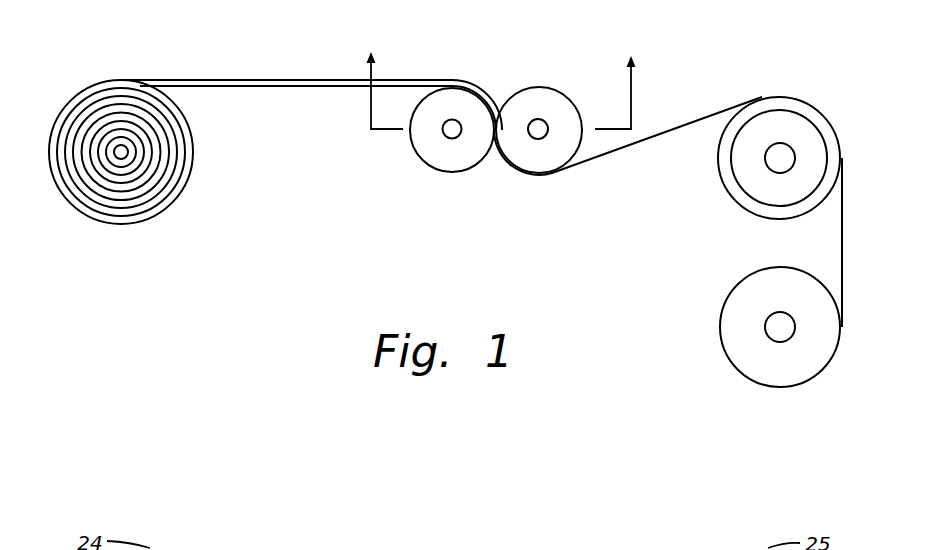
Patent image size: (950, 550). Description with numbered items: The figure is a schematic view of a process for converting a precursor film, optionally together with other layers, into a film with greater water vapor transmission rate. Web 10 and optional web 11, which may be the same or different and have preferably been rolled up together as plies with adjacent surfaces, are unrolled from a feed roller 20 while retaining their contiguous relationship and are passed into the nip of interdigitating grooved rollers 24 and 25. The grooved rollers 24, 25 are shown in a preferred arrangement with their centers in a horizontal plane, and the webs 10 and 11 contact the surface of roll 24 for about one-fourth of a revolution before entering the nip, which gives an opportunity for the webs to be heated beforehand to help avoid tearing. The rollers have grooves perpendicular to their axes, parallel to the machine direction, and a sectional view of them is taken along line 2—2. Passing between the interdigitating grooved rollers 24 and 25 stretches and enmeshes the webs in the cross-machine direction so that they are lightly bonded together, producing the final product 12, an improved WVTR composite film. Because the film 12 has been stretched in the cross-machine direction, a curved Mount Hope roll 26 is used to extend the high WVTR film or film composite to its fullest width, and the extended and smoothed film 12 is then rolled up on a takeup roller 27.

The web 10 is at (228, 80).
The optional web 11 is at (300, 88).
The final product 12 is at (703, 120).
The feed roller 20 is at (212, 228).
The grooved roller 24 is at (453, 192).
The grooved roller 25 is at (536, 66).
The curved Mount Hope roll 26 is at (694, 207).
The takeup roller 27 is at (695, 286).
The line 2— 2 is at (502, 77).